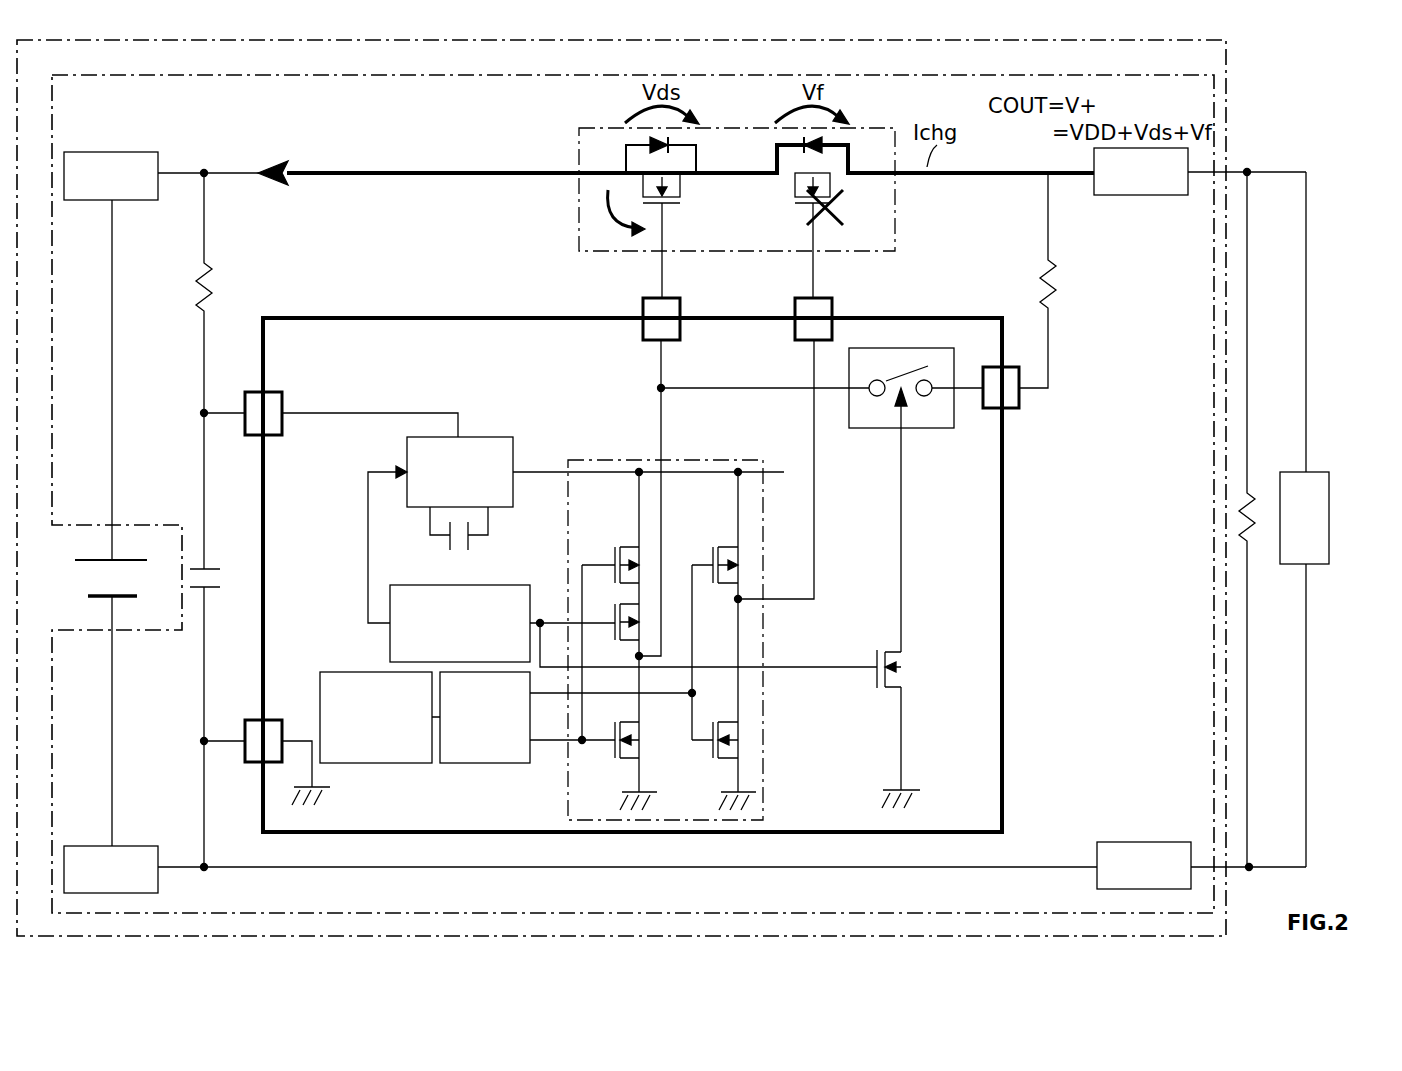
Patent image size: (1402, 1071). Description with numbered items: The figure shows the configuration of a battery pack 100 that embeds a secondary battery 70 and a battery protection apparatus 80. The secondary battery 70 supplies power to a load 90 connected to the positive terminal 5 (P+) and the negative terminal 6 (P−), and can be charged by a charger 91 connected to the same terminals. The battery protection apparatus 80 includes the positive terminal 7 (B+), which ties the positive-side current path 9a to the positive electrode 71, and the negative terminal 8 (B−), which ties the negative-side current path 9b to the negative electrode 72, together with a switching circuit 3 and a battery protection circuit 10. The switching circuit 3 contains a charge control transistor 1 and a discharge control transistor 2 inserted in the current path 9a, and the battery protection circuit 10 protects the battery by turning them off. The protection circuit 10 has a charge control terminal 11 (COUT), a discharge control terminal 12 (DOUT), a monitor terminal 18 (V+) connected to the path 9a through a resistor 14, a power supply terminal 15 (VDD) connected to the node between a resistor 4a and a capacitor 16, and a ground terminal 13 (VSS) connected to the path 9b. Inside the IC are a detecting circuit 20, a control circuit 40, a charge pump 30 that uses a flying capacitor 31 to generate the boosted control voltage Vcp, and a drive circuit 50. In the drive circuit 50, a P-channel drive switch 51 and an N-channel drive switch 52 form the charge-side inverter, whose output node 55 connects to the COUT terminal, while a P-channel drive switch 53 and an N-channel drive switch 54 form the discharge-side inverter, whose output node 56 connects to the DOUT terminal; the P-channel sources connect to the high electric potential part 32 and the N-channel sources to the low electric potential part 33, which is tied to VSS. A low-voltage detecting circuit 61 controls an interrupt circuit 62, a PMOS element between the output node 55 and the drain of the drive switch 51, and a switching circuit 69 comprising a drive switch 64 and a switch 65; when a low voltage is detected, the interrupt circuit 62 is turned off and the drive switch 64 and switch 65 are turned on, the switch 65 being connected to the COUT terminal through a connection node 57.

The charge control transistor 1 is at (643, 190).
The discharge control transistor 2 is at (795, 190).
The switching circuit 3 is at (709, 213).
The resistor 4a is at (212, 275).
The positive terminal 5 is at (1140, 195).
The negative terminal 6 is at (1150, 842).
The positive terminal 7 is at (120, 152).
The negative terminal 8 is at (125, 846).
The positive-side current path 9a is at (230, 173).
The negative-side current path 9b is at (230, 867).
The battery protection circuit 10 is at (370, 318).
The charge control terminal 11 is at (690, 298).
The discharge control terminal 12 is at (832, 298).
The ground terminal 13 is at (245, 762).
The resistor 14 is at (1056, 275).
The power supply terminal 15 is at (282, 392).
The capacitor 16 is at (218, 568).
The monitor terminal 18 is at (1020, 367).
The detecting circuit 20 is at (345, 672).
The charge pump 30 is at (480, 437).
The flying capacitor 31 is at (450, 548).
The high electric potential part 32 is at (775, 470).
The low electric potential part 33 is at (325, 790).
The control circuit 40 is at (490, 763).
The drive circuit 50 is at (663, 580).
The P-channel drive switch 51 is at (613, 548).
The N-channel drive switch 52 is at (613, 748).
The P-channel drive switch 53 is at (713, 548).
The N-channel drive switch 54 is at (713, 748).
The output node 55 is at (638, 656).
The output node 56 is at (738, 599).
The connection node 57 is at (661, 389).
The low-voltage detecting circuit 61 is at (470, 585).
The interrupt circuit 62 is at (613, 605).
The drive switch 64 is at (877, 668).
The switch 65 is at (913, 428).
The switching circuit 69 is at (917, 578).
The secondary battery 70 is at (97, 523).
The positive electrode 71 is at (110, 556).
The negative electrode 72 is at (110, 598).
The battery protection apparatus 80 is at (748, 70).
The load 90 is at (1247, 493).
The charger 91 is at (1306, 472).
The battery pack 100 is at (1226, 70).